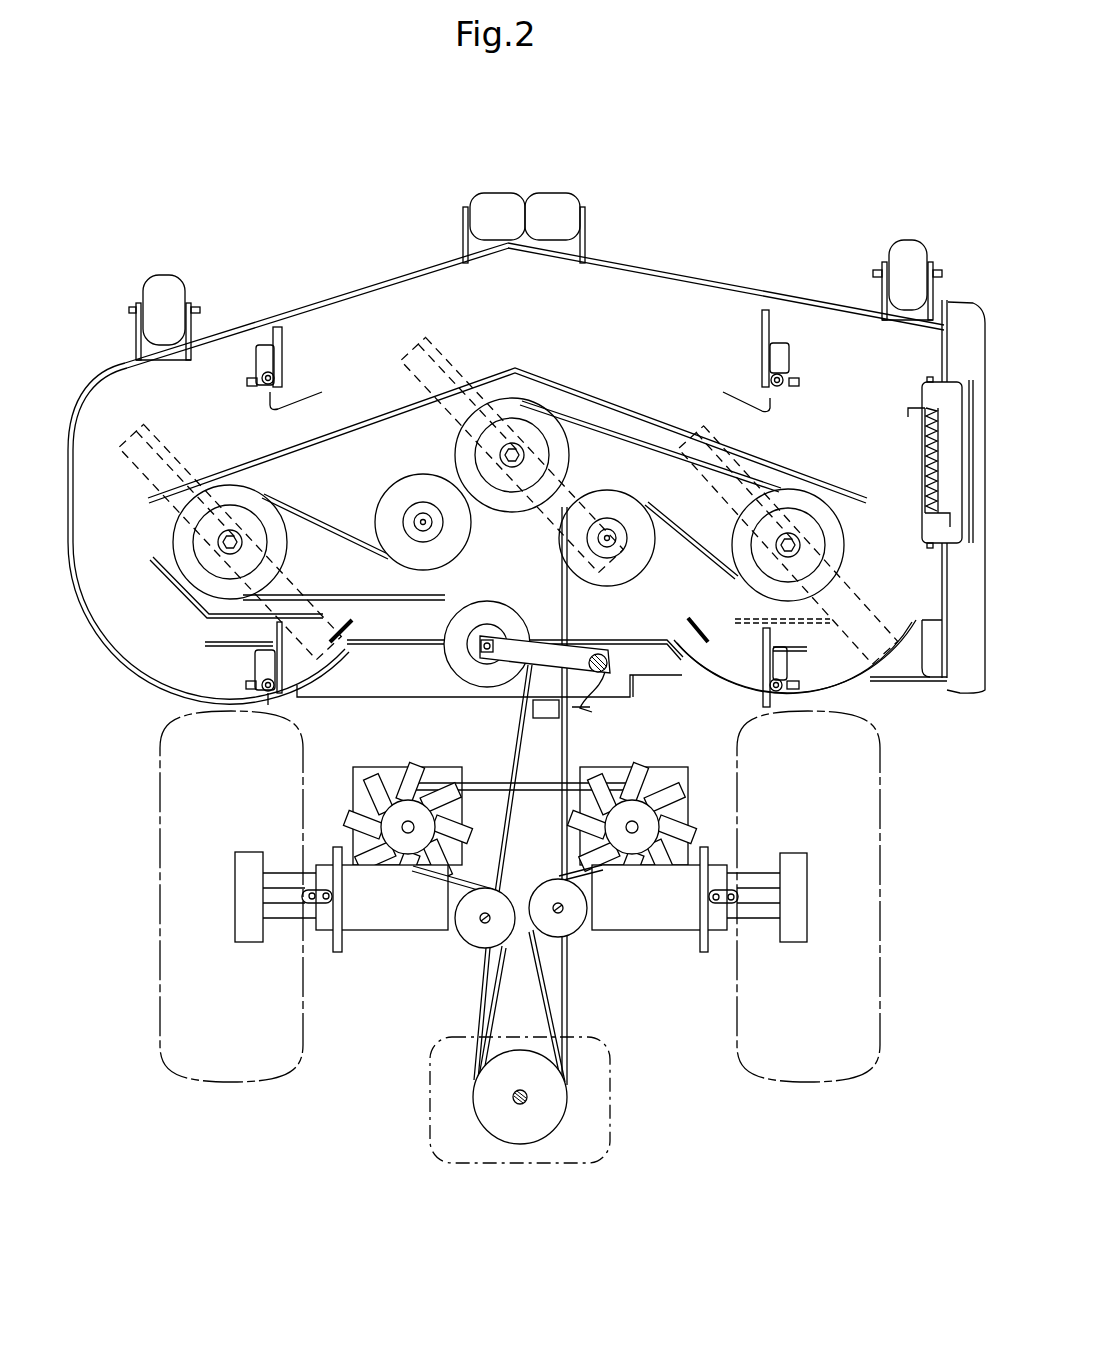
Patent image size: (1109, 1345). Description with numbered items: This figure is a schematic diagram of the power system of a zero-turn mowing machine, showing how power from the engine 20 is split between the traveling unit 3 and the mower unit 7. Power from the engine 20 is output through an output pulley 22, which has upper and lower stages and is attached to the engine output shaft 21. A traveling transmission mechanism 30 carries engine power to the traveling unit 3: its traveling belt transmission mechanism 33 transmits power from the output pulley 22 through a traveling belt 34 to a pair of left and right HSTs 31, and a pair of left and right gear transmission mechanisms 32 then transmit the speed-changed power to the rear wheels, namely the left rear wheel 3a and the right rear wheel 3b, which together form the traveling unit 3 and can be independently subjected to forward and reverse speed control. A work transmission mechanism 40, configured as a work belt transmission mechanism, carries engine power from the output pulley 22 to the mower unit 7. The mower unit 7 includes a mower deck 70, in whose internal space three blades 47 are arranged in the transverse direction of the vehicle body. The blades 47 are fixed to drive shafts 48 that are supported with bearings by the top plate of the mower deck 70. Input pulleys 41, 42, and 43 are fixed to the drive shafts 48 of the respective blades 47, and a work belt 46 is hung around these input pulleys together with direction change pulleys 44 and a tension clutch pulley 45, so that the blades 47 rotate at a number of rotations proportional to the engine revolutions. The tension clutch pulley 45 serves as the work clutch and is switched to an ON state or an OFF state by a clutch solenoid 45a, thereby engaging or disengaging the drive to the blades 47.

The mower unit 7 is at (328, 288).
The mower deck 70 is at (690, 297).
The blades 47 is at (440, 360).
The input pulley 42 is at (522, 412).
The input pulley 41 is at (200, 548).
The input pulley 43 is at (805, 496).
The drive shafts 48 is at (240, 538).
The work belt 46 is at (335, 530).
The direction change pulleys 44 is at (450, 542).
The tension clutch pulley 45 is at (458, 652).
The clutch solenoid 45a is at (548, 720).
The traveling belt 34 is at (495, 785).
The work transmission mechanism 40 is at (572, 749).
The HSTs 31 is at (398, 769).
The gear transmission mechanisms 32 is at (375, 924).
The traveling belt transmission mechanism 33 is at (719, 802).
The traveling transmission mechanism 30 is at (455, 890).
The engine output shaft 21 is at (513, 1097).
The output pulley 22 is at (550, 1103).
The engine 20 is at (530, 1166).
The left rear wheel 3a is at (160, 908).
The right rear wheel 3b is at (880, 935).
The traveling unit 3 is at (523, 896).